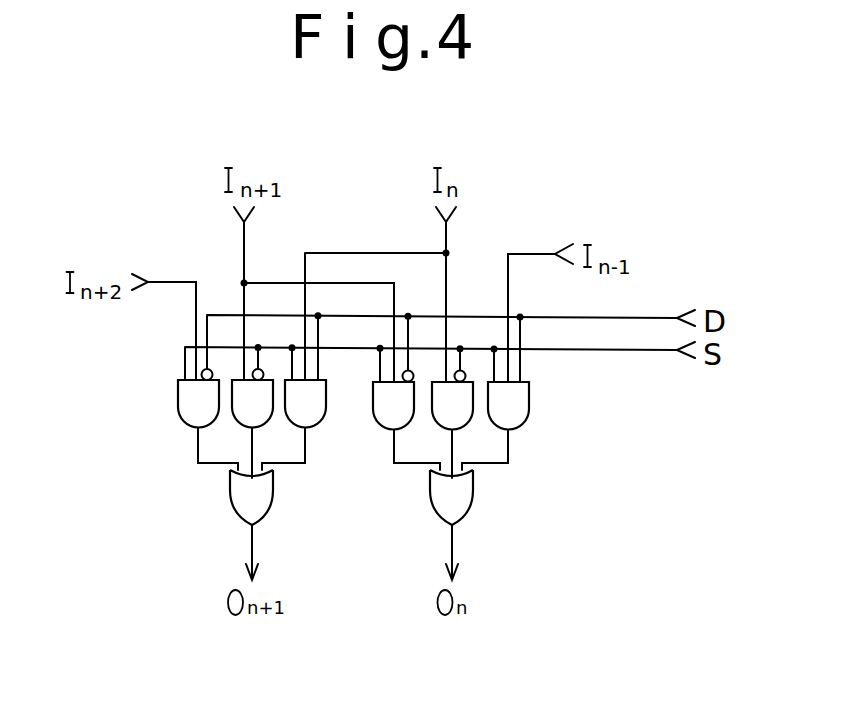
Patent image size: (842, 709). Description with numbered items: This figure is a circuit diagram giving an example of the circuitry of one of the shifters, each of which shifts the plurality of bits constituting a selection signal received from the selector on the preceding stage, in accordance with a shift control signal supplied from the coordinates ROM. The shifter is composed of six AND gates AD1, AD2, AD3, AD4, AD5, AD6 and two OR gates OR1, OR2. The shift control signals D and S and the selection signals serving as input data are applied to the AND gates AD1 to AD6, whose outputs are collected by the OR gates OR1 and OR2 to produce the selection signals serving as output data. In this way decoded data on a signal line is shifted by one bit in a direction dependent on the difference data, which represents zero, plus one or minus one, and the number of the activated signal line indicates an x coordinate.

The AND gate AD1 is at (522, 395).
The AND gate AD2 is at (462, 418).
The AND gate AD3 is at (383, 418).
The AND gate AD4 is at (313, 415).
The AND gate AD5 is at (238, 418).
The AND gate AD6 is at (183, 405).
The OR gate OR1 is at (465, 496).
The OR gate OR2 is at (235, 503).